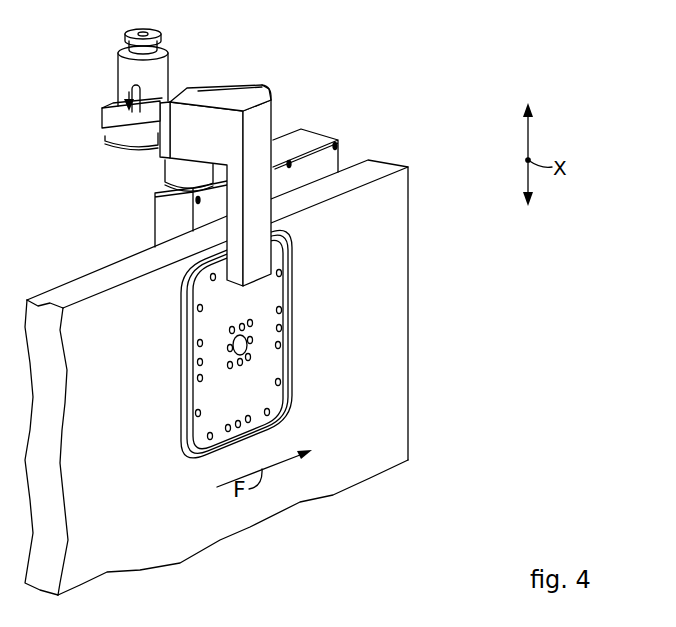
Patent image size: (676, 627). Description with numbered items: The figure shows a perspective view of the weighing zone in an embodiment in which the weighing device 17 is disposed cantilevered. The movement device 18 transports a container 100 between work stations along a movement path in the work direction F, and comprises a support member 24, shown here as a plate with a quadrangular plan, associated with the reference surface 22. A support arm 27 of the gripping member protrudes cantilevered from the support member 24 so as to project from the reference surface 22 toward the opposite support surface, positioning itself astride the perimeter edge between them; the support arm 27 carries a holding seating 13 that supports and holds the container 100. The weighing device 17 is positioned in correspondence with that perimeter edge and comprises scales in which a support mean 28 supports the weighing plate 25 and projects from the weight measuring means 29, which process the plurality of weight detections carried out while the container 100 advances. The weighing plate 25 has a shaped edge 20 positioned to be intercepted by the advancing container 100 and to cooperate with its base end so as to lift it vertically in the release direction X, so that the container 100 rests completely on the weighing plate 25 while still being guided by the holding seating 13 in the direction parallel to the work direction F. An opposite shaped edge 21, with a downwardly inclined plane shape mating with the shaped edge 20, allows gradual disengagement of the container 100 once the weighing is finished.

The container 100 is at (175, 52).
The weighing plate 25 is at (231, 84).
The shaped edge 21 is at (276, 93).
The support arm 27 is at (227, 132).
The weight measuring means 29 is at (328, 163).
The reference surface 22 is at (385, 208).
The support member 24 is at (268, 370).
The movement device 18 is at (165, 293).
The weighing device 17 is at (150, 188).
The support mean 28 is at (182, 178).
The holding seating 13 is at (139, 112).
The shaped edge 20 is at (116, 138).